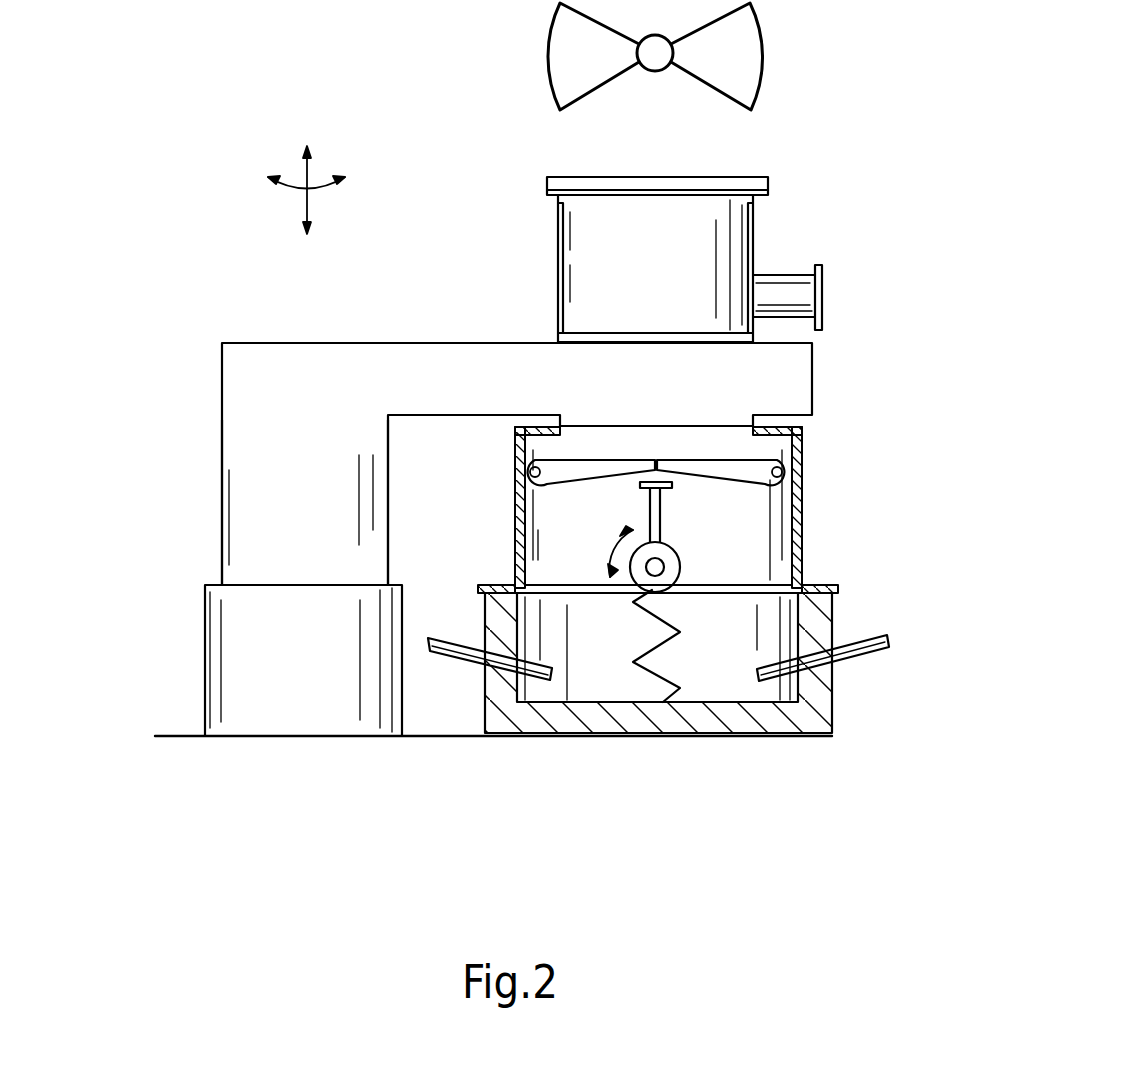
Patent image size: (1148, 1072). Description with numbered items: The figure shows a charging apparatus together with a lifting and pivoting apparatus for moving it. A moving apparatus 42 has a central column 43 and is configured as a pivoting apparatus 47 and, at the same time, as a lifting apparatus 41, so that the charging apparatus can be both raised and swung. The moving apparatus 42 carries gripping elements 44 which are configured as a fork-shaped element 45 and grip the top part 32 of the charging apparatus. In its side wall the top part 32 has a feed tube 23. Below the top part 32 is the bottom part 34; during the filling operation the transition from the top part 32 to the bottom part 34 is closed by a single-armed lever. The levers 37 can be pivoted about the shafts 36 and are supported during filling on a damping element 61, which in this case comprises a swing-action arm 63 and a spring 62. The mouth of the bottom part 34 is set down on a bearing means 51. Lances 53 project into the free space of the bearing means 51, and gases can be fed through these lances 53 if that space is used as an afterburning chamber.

The feed tube 23 is at (782, 290).
The top part 32 is at (575, 252).
The bottom part 34 is at (513, 512).
The shafts 36 is at (530, 468).
The levers 37 is at (681, 304).
The lifting apparatus 41 is at (250, 488).
The moving apparatus 42 is at (251, 718).
The central column 43 is at (207, 817).
The gripping elements 44 is at (517, 343).
The fork-shaped element 45 is at (398, 362).
The pivoting apparatus 47 is at (251, 718).
The bearing means 51 is at (803, 613).
The lances 53 is at (465, 663).
The damping element 61 is at (515, 489).
The spring 62 is at (675, 635).
The swing-action arm 63 is at (657, 505).